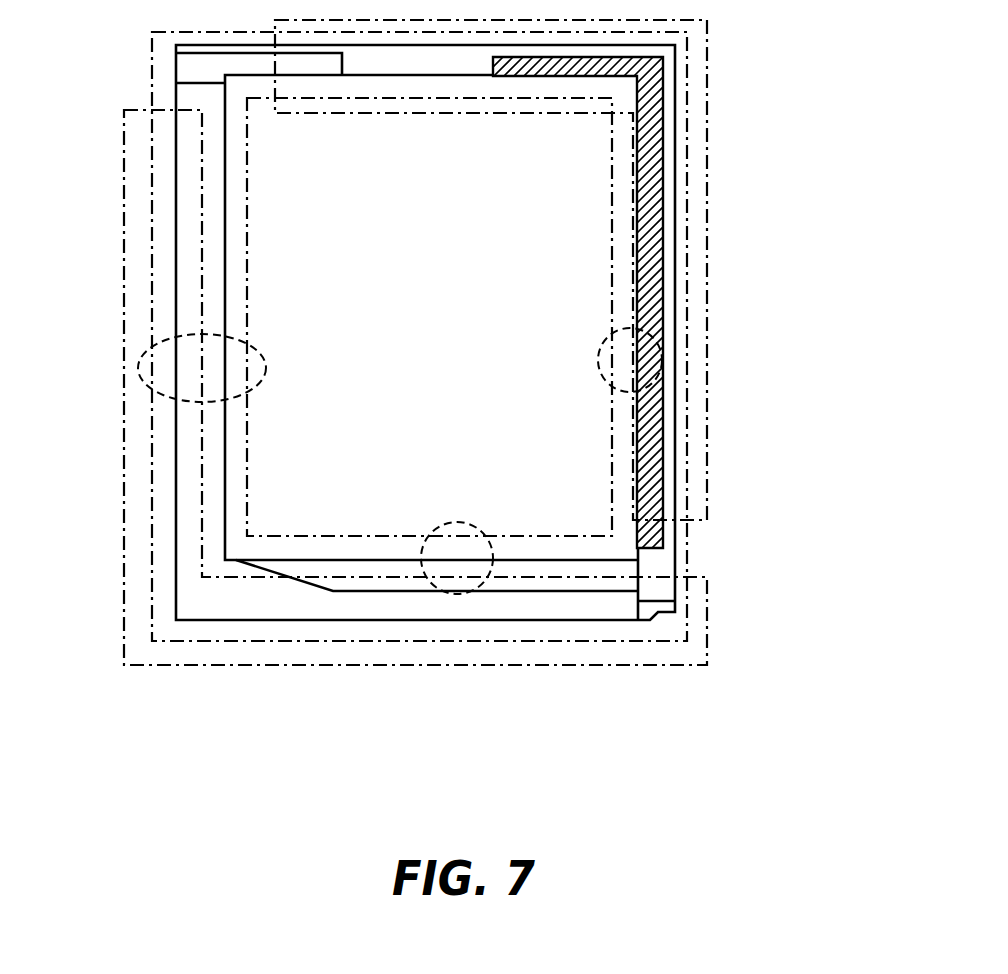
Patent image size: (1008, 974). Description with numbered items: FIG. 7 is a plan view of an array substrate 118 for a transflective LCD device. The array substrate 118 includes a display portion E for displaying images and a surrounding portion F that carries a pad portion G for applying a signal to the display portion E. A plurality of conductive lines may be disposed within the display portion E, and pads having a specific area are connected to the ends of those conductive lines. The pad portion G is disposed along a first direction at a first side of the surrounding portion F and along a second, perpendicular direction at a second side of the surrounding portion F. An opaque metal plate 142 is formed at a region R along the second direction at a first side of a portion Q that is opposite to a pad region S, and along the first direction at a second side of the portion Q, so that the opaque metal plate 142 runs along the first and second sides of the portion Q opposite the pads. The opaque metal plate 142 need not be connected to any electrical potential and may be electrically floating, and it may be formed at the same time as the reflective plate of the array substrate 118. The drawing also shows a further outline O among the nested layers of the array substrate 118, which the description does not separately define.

The array substrate 118 is at (470, 405).
The opaque metal plate 142 is at (663, 521).
The organic layer O is at (708, 290).
The surrounding portion F is at (355, 650).
The pad portion G is at (707, 610).
The display portion E is at (570, 553).
The pad region S is at (138, 371).
The region R is at (622, 392).
The portion Q is at (458, 594).